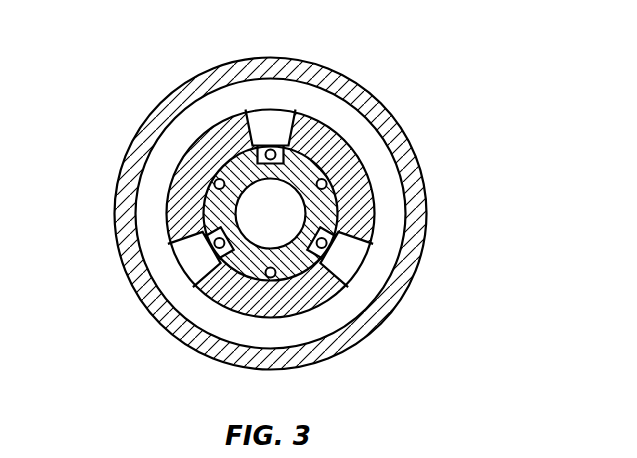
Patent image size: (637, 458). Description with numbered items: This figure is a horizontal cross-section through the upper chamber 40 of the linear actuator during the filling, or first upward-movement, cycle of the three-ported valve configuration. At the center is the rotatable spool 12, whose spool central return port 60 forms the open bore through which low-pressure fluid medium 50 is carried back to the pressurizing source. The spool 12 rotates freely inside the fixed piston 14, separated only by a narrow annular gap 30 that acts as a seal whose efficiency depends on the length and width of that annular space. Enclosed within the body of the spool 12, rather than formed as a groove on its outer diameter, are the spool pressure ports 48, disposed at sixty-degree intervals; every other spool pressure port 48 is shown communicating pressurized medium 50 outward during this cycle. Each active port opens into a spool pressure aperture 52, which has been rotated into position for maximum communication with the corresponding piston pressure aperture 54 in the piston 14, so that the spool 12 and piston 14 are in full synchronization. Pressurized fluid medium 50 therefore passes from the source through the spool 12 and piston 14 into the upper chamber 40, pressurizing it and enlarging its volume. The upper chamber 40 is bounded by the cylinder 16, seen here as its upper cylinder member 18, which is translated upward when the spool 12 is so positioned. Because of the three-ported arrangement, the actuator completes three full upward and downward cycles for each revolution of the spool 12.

The spool 12 is at (331, 133).
The piston 14 is at (348, 157).
The cylinder 16 is at (410, 165).
The upper cylinder member 18 is at (413, 197).
The annular gap 30 is at (199, 200).
The upper chamber 40 is at (320, 312).
The spool pressure port 48 is at (265, 152).
The fluid medium 50 is at (329, 112).
The spool pressure aperture 52 is at (283, 150).
The piston pressure aperture 54 is at (257, 118).
The spool central return port 60 is at (283, 205).